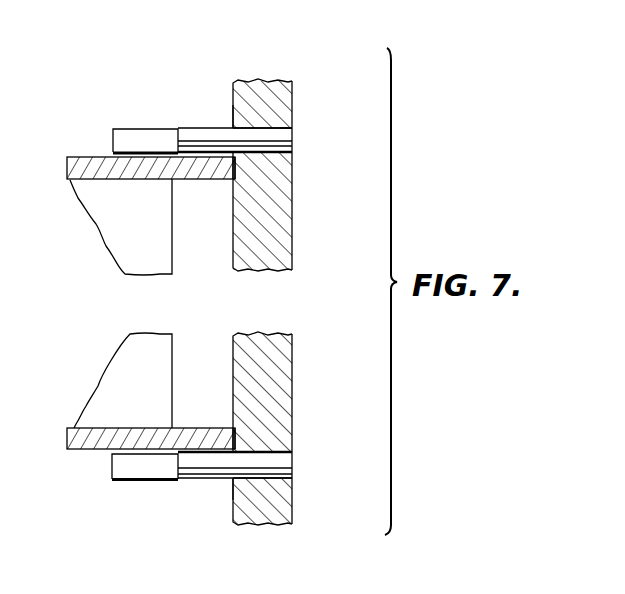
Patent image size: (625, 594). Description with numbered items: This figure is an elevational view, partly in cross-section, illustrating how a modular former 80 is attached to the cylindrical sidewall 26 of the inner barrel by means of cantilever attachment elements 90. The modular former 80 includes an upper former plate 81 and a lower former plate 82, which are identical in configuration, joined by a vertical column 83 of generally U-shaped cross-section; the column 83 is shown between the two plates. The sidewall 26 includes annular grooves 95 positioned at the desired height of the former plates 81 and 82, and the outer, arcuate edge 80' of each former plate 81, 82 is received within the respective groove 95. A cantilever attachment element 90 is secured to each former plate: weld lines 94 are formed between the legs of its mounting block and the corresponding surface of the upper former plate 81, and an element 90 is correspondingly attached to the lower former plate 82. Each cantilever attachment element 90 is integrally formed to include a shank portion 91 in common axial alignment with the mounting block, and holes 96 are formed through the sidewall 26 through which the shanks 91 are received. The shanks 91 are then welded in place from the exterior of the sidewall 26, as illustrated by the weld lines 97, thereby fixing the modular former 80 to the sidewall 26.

The modular former 80 is at (185, 296).
The outer arcuate edge 80' is at (205, 349).
The cylindrical sidewall 26 is at (266, 80).
The upper former plate 81 is at (72, 157).
The lower former plate 82 is at (68, 450).
The vertical column 83 is at (172, 275).
The cantilever attachment element 90 is at (135, 121).
The shank portion 91 is at (190, 128).
The weld line 94 is at (113, 153).
The annular groove 95 is at (233, 170).
The hole 96 is at (235, 113).
The weld line 97 is at (287, 127).